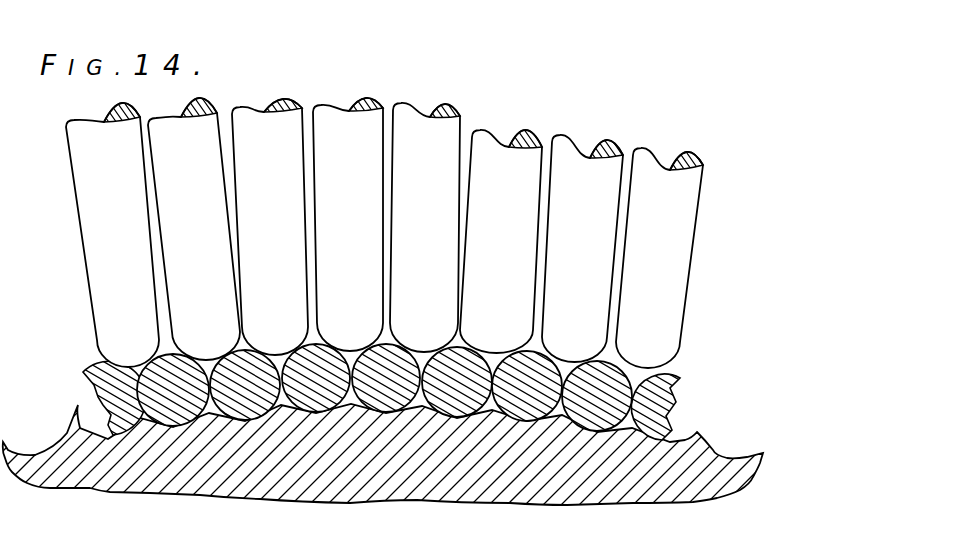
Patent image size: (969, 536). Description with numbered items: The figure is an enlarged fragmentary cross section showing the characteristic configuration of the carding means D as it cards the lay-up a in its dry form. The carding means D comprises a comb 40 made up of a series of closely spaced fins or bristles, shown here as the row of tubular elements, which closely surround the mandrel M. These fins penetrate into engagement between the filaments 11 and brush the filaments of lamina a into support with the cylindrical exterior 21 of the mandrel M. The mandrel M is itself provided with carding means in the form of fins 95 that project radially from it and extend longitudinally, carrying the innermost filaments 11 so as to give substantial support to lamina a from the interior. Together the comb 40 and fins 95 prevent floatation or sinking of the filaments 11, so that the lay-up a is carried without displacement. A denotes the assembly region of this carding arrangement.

The tube assembly A is at (58, 176).
The carding means D is at (106, 222).
The comb 40 is at (367, 224).
The lay-up a is at (78, 372).
The fins 95 is at (376, 388).
The filaments 11 is at (380, 392).
The mandrel M is at (441, 456).
The cylindrical exterior 21 is at (705, 437).